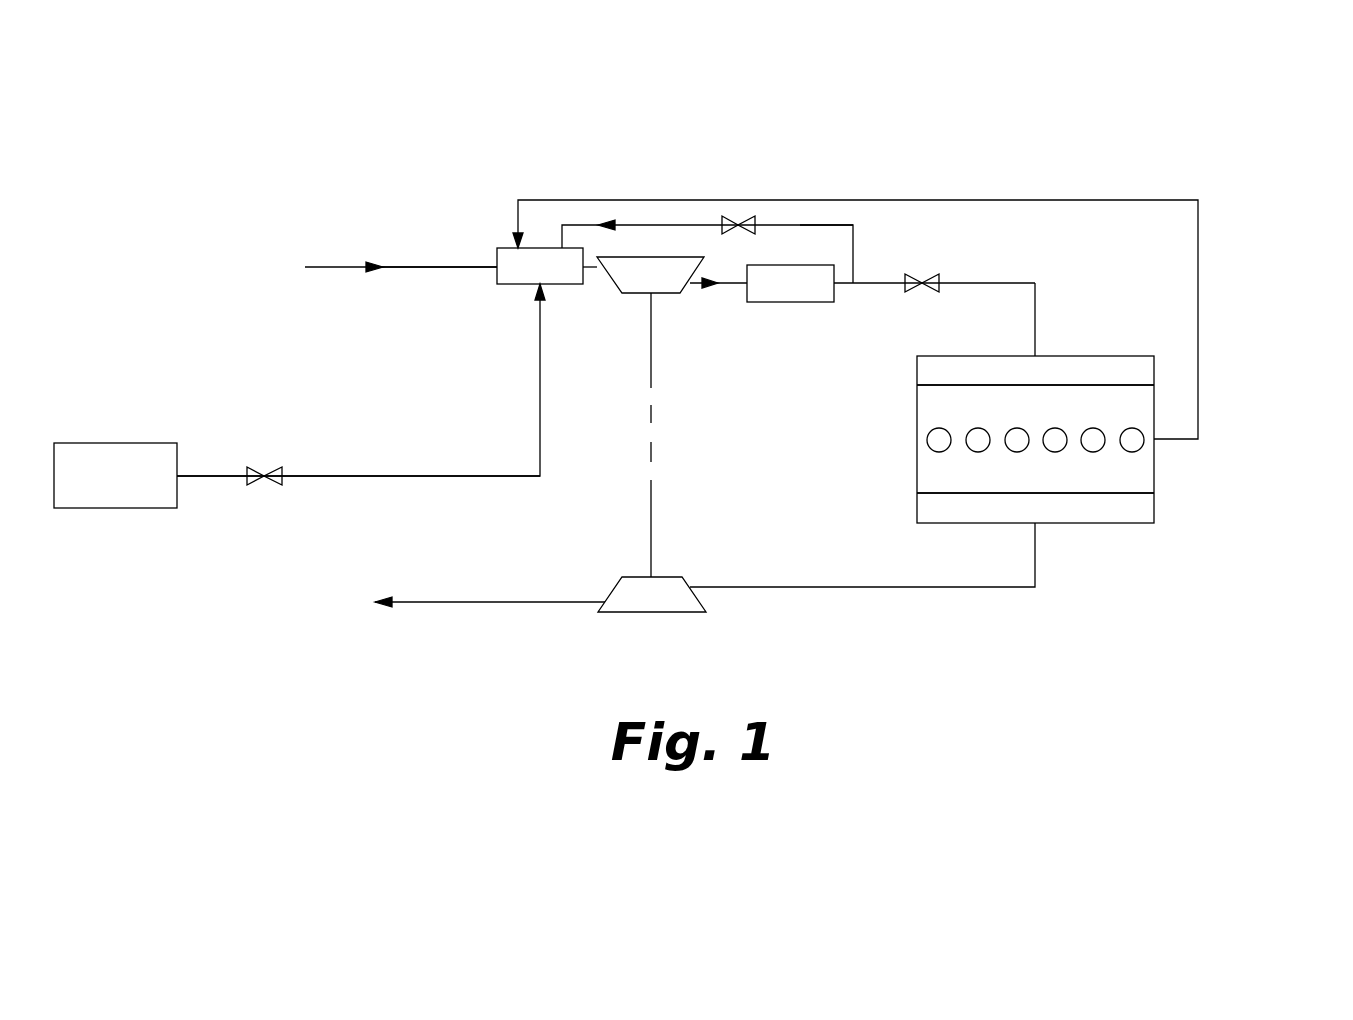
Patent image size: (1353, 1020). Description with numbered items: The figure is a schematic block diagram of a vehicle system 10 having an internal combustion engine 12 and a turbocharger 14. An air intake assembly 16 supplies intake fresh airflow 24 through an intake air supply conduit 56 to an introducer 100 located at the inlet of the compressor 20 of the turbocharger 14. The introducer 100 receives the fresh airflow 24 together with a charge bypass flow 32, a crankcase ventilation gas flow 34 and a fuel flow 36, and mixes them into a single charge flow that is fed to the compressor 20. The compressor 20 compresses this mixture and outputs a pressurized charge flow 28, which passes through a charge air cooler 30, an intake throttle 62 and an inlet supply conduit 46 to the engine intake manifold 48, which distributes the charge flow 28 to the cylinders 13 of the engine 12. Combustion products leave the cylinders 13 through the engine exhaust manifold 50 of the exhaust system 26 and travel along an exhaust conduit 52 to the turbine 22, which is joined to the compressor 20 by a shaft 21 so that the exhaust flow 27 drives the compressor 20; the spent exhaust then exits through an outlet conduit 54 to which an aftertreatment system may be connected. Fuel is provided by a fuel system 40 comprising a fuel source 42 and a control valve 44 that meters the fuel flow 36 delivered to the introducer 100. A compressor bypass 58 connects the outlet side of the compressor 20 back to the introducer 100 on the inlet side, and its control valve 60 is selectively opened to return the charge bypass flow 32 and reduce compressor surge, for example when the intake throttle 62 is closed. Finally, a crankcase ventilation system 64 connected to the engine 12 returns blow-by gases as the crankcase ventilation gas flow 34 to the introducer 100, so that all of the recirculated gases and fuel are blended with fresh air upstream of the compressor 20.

The system 10 is at (1300, 200).
The internal combustion engine 12 is at (1170, 470).
The cylinders 13 is at (943, 447).
The turbocharger 14 is at (672, 509).
The air intake assembly 16 is at (470, 210).
The compressor 20 is at (615, 294).
The shaft 21 is at (652, 413).
The turbine 22 is at (655, 613).
The intake fresh airflow 24 is at (323, 266).
The exhaust system 26 is at (808, 605).
The exhaust flow 27 is at (437, 604).
The pressurized charge flow 28 is at (712, 295).
The charge air cooler 30 is at (798, 303).
The charge bypass flow 32 is at (656, 224).
The crankcase ventilation gas flow 34 is at (558, 199).
The fuel flow 36 is at (539, 405).
The fuel system 40 is at (212, 490).
The fuel source 42 is at (115, 475).
The control valve 44 is at (272, 466).
The inlet supply conduit 46 is at (1003, 283).
The engine intake manifold 48 is at (1093, 372).
The engine exhaust manifold 50 is at (1128, 510).
The exhaust conduit 52 is at (905, 588).
The outlet conduit 54 is at (515, 600).
The intake air supply conduit 56 is at (407, 268).
The compressor bypass 58 is at (808, 210).
The control valve 60 is at (741, 216).
The intake throttle 62 is at (910, 274).
The crankcase ventilation system 64 is at (1045, 195).
The introducer 100 is at (505, 292).